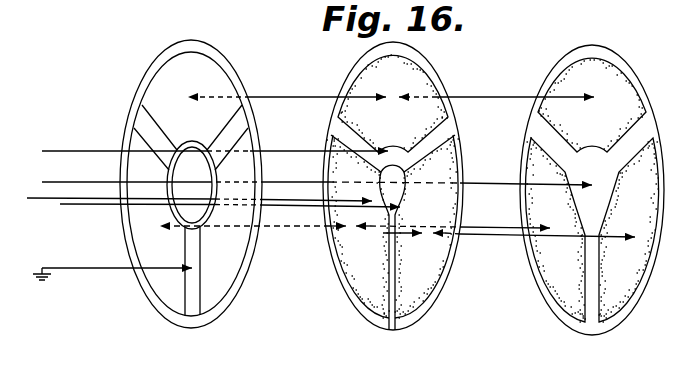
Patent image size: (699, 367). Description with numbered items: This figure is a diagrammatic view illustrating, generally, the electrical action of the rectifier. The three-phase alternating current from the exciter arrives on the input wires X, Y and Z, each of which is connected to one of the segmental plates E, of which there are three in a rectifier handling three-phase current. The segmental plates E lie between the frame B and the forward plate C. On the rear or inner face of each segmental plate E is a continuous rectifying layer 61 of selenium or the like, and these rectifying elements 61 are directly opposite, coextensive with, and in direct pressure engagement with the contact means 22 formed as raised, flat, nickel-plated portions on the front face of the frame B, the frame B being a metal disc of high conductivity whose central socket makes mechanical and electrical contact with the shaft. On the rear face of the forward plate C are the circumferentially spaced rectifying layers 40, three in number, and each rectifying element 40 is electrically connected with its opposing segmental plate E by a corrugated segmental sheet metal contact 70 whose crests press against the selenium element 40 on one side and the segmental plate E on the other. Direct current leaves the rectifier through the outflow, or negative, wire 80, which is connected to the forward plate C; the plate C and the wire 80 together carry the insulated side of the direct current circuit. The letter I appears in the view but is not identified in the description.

The contact means 22 is at (228, 89).
The outflow wire 80 is at (98, 164).
The rectifying elements 61 is at (393, 186).
The contact 70 is at (497, 97).
The rectifying elements 40 is at (592, 190).
The frame B is at (142, 82).
The segmental plates E is at (444, 77).
The forward plate C is at (664, 177).
The central stem I is at (437, 292).
The input wire X is at (107, 127).
The input wire Y is at (33, 201).
The input wire Z is at (84, 207).